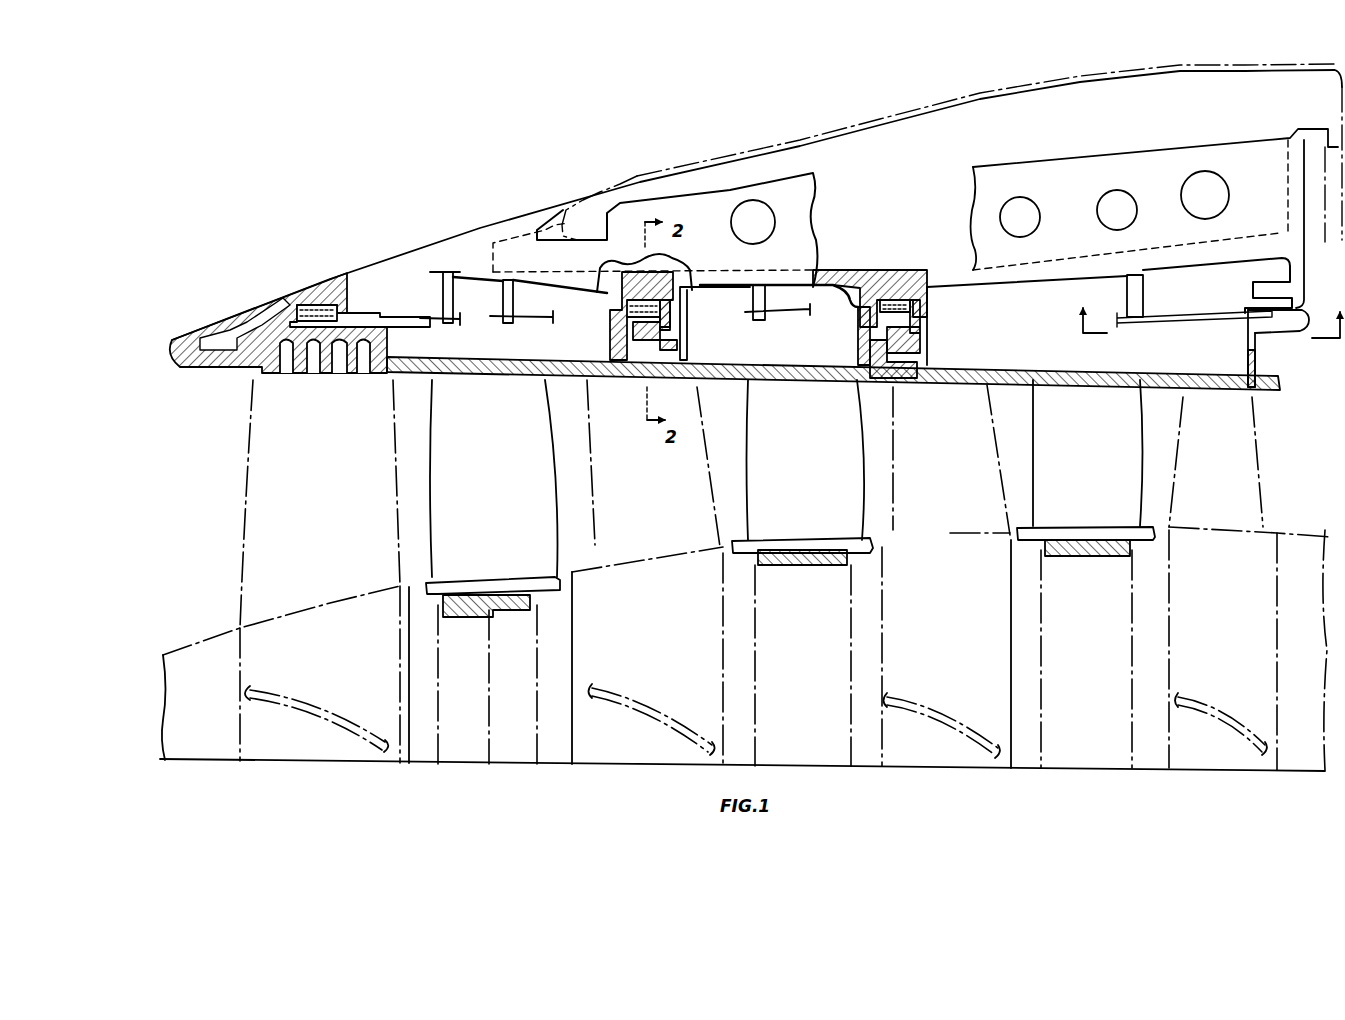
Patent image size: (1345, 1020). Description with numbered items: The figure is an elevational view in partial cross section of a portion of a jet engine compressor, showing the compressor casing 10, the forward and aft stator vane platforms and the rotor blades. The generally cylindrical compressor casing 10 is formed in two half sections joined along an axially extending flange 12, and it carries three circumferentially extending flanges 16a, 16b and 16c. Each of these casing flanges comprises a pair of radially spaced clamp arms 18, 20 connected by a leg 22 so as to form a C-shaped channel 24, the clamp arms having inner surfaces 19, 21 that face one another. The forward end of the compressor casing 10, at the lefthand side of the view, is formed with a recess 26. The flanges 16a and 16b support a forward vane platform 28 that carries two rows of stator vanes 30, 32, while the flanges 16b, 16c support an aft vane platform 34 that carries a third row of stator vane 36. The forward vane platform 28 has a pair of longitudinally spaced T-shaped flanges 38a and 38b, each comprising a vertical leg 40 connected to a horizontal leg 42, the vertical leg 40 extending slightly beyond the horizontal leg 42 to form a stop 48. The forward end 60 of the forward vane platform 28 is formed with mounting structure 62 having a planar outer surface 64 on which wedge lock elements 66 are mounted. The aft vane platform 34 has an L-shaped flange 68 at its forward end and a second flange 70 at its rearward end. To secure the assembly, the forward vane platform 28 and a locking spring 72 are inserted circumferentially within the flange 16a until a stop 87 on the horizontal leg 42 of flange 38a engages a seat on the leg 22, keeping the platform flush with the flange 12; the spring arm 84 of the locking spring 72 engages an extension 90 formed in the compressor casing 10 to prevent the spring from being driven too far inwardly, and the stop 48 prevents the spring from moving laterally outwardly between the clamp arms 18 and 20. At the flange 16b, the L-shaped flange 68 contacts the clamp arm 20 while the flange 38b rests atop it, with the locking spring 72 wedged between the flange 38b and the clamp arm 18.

The compressor casing 10 is at (866, 272).
The axially extending flange 12 is at (812, 188).
The circumferentially extending flange 16a is at (702, 295).
The circumferentially extending flange 16b is at (910, 285).
The circumferentially extending flange 16c is at (1270, 272).
The clamp arm 18 is at (598, 290).
The inner surface 19 is at (648, 270).
The clamp arm 20 is at (610, 350).
The inner surface 21 is at (660, 322).
The leg 22 is at (680, 322).
The C-shaped channel 24 is at (685, 302).
The recess 26 is at (310, 287).
The forward vane platform 28 is at (452, 372).
The stator vanes 30 is at (494, 472).
The stator vanes 32 is at (812, 476).
The aft vane platform 34 is at (1283, 392).
The stator vane 36 is at (1092, 474).
The flange 38a is at (595, 327).
The flange 38b is at (853, 330).
The vertical leg 40 is at (616, 375).
The horizontal leg 42 is at (684, 347).
The stop 48 is at (605, 290).
The forward end 60 is at (183, 320).
The mounting structure 62 is at (318, 395).
The planar outer surface 64 is at (313, 320).
The wedge lock elements 66 is at (345, 320).
The L-shaped flange 68 is at (912, 375).
The second flange 70 is at (1245, 348).
The locking spring 72 is at (665, 290).
The spring arm 84 is at (468, 315).
The stop 87 is at (1306, 311).
The extension 90 is at (776, 288).